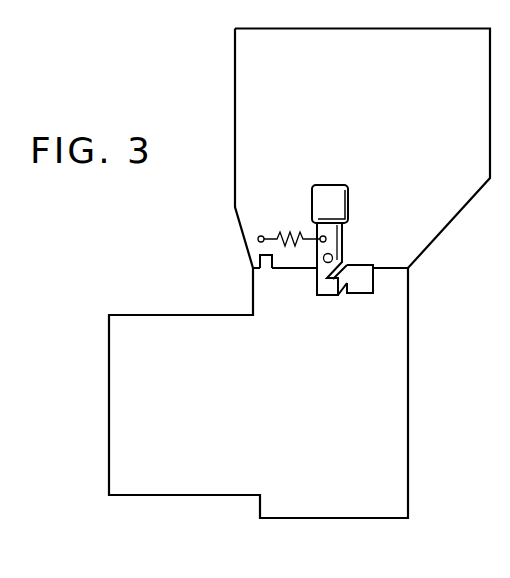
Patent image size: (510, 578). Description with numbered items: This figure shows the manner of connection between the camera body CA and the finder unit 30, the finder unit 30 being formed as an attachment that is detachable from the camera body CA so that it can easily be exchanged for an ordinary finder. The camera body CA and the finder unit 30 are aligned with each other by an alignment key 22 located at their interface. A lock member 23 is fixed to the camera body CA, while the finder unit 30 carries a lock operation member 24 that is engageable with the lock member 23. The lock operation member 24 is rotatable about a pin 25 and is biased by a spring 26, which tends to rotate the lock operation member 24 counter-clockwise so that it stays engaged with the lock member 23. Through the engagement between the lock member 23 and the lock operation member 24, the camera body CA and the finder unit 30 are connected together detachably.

The finder unit 30 is at (250, 25).
The camera body CA is at (292, 524).
The alignment key 22 is at (267, 272).
The lock member 23 is at (362, 288).
The lock operation member 24 is at (348, 205).
The pin 25 is at (332, 255).
The spring 26 is at (290, 227).